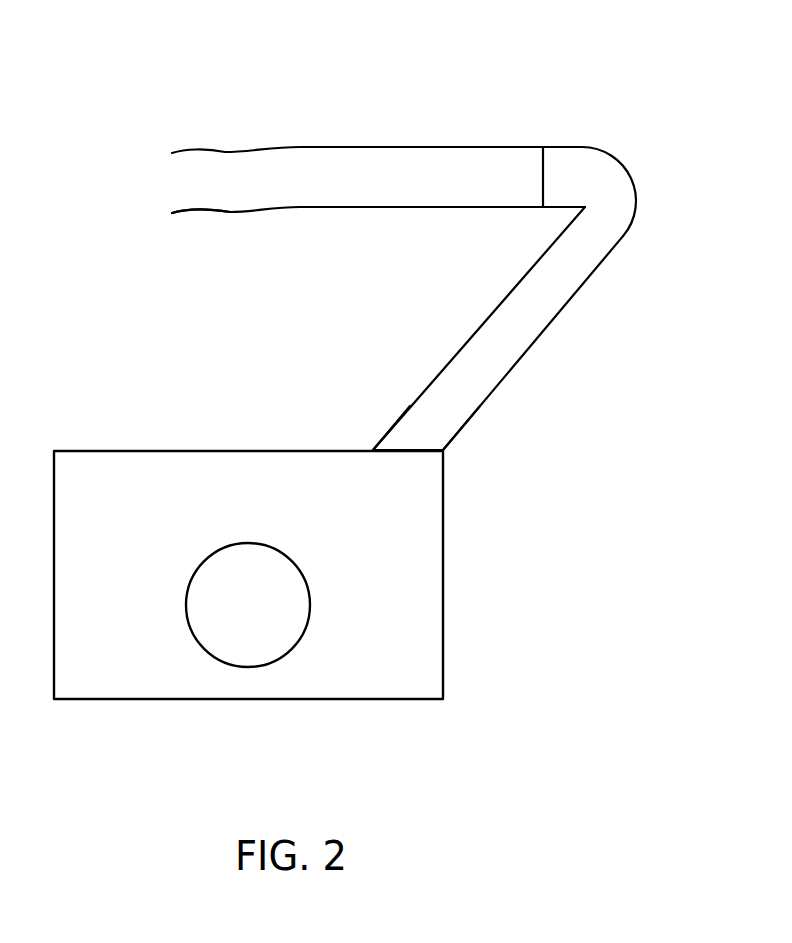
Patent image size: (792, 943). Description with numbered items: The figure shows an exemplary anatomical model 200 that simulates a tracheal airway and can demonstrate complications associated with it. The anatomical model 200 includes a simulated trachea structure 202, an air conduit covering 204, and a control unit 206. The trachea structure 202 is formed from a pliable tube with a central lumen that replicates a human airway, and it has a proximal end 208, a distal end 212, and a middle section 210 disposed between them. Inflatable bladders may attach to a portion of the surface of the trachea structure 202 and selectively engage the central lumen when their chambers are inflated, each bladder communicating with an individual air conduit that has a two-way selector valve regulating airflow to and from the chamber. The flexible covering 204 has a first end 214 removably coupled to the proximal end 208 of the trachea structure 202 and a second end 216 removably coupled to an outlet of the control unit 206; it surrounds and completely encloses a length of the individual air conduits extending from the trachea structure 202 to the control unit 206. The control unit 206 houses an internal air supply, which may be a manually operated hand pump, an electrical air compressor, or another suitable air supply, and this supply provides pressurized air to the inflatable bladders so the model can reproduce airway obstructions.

The anatomical model 200 is at (612, 82).
The simulated trachea structure 202 is at (285, 147).
The air conduit covering 204 is at (578, 295).
The control unit 206 is at (268, 525).
The proximal end 208 is at (497, 157).
The middle section 210 is at (355, 207).
The distal end 212 is at (202, 202).
The first end 214 is at (630, 182).
The second end 216 is at (457, 432).